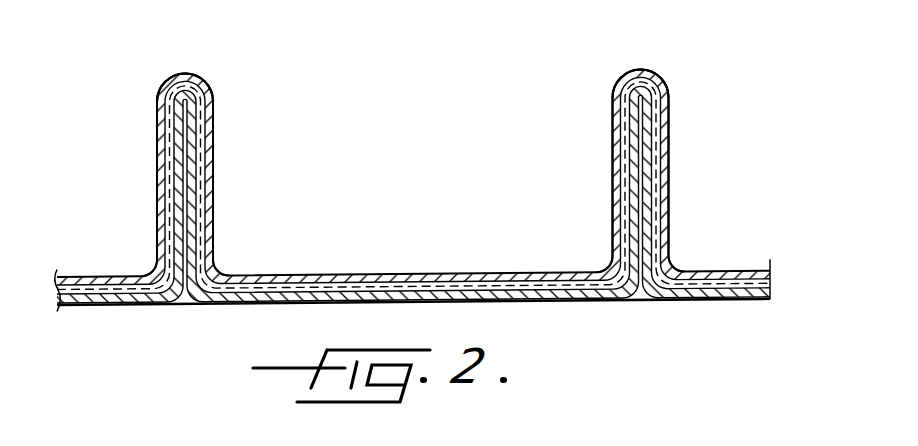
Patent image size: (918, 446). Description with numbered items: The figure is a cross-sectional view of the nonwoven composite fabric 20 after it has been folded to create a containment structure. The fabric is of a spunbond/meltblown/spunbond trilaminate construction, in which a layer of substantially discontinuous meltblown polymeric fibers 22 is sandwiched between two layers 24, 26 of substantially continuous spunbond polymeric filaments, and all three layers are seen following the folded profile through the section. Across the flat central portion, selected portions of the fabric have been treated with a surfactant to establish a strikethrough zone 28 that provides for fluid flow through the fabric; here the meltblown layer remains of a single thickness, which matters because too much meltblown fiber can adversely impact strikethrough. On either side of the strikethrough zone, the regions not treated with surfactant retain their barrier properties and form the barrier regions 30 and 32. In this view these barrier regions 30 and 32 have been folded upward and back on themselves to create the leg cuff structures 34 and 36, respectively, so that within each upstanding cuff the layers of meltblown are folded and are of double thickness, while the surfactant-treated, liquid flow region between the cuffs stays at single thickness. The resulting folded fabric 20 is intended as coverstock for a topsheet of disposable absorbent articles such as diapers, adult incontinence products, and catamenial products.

The nonwoven composite fabric 20 is at (442, 189).
The layer of meltblown polymeric fibers 22 is at (771, 285).
The layer of spunbond polymeric filaments 24 is at (718, 272).
The layer of spunbond polymeric filaments 26 is at (723, 301).
The strikethrough zone 28 is at (358, 271).
The barrier region 30 is at (208, 148).
The barrier region 32 is at (670, 129).
The leg cuff structure 34 is at (187, 72).
The leg cuff structure 36 is at (646, 71).